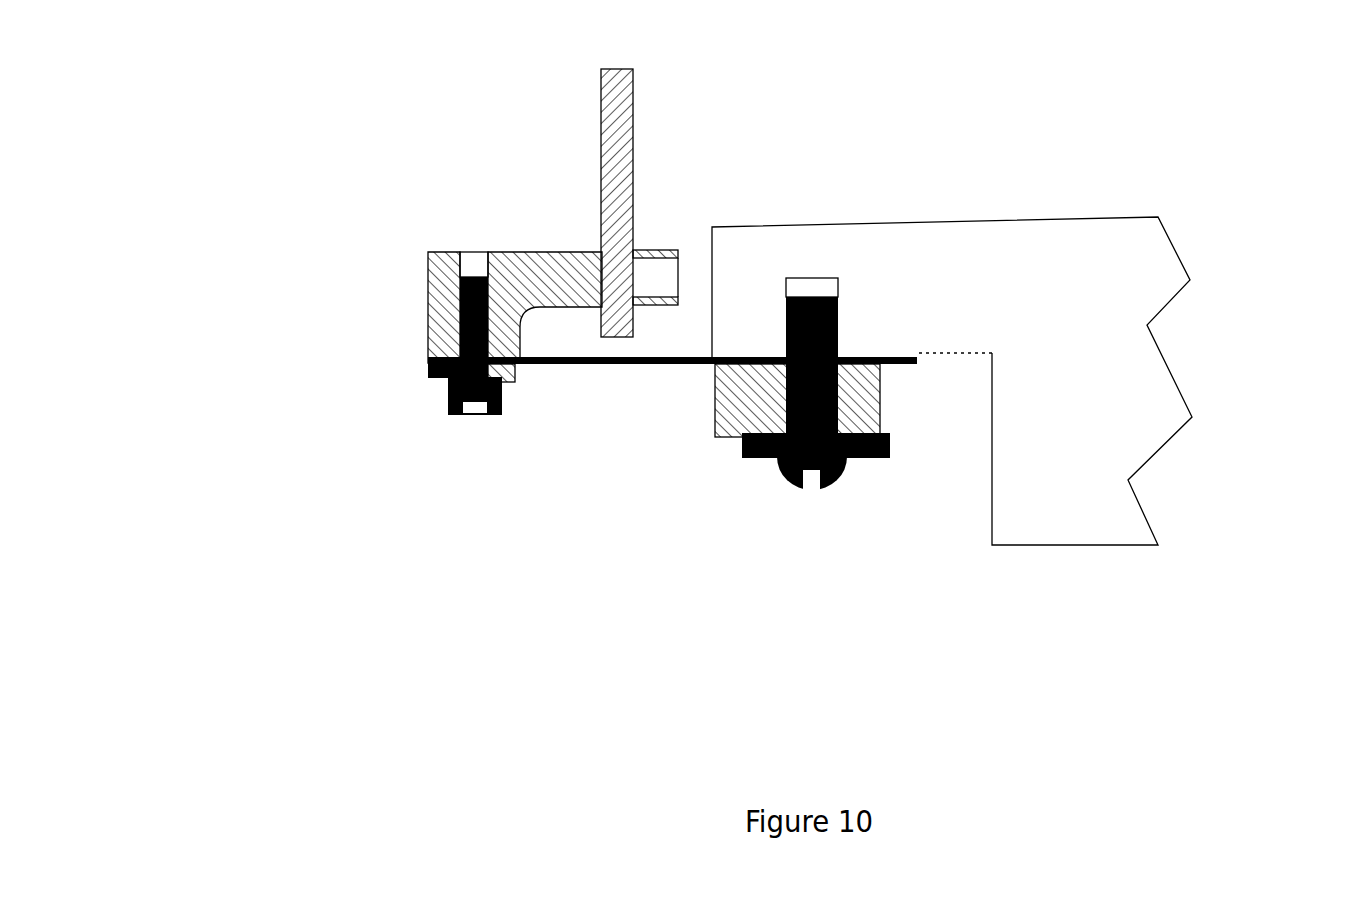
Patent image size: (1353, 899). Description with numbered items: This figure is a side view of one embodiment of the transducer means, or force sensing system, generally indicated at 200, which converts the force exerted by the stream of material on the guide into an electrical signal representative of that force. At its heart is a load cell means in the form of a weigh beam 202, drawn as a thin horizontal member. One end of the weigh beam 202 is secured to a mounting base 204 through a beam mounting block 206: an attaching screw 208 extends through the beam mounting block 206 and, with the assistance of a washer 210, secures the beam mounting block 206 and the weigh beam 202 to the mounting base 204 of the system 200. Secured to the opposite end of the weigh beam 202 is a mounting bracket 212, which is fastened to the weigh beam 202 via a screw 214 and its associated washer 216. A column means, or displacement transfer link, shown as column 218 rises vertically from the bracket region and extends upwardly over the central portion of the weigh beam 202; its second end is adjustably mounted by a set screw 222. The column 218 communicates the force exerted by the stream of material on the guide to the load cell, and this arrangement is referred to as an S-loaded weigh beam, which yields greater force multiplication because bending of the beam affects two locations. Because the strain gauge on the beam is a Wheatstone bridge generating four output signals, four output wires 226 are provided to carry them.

The transducer means 200 is at (274, 175).
The weigh beam 202 is at (427, 363).
The mounting base 204 is at (1108, 295).
The beam mounting block 206 is at (715, 437).
The attaching screw 208 is at (833, 497).
The washer 210 is at (765, 462).
The mounting bracket 212 is at (570, 250).
The screw 214 is at (472, 420).
The washer 216 is at (437, 378).
The column 218 is at (633, 93).
The set screw 222 is at (683, 267).
The output wires 226 is at (905, 365).